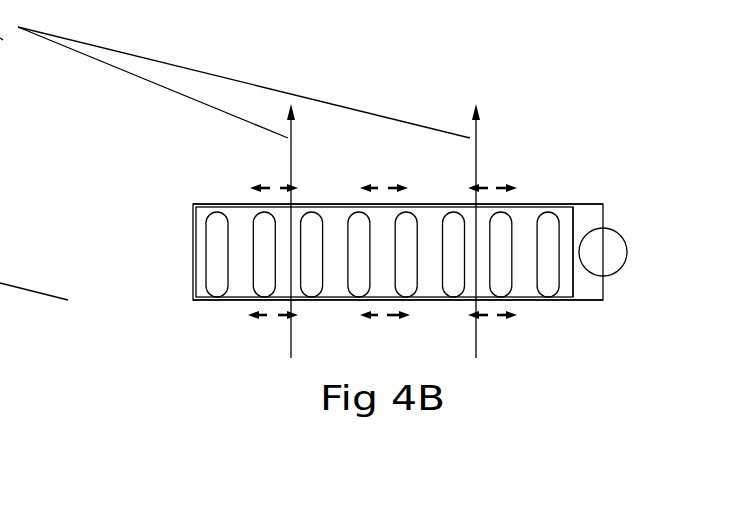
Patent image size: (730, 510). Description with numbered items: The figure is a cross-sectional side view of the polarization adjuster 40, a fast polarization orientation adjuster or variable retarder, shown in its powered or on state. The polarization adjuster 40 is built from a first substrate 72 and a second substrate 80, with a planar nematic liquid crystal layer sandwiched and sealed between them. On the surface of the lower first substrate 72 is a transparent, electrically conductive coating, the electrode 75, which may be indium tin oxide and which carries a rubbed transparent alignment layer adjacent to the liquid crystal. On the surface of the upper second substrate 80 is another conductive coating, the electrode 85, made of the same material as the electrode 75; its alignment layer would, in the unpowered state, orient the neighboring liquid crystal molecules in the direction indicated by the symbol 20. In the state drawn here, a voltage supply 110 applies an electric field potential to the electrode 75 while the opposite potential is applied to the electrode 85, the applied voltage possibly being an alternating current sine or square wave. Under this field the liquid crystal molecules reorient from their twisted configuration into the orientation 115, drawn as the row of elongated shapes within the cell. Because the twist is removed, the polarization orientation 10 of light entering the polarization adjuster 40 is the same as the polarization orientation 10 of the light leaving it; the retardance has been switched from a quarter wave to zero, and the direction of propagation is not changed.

The polarization orientation 10 is at (262, 187).
The orientation direction symbol 20 is at (11, 142).
The polarization adjuster 40 is at (192, 269).
The first substrate 72 is at (535, 304).
The electrode 75 is at (571, 300).
The second substrate 80 is at (530, 204).
The electrode 85 is at (553, 207).
The voltage supply 110 is at (619, 274).
The orientation 115 is at (222, 252).